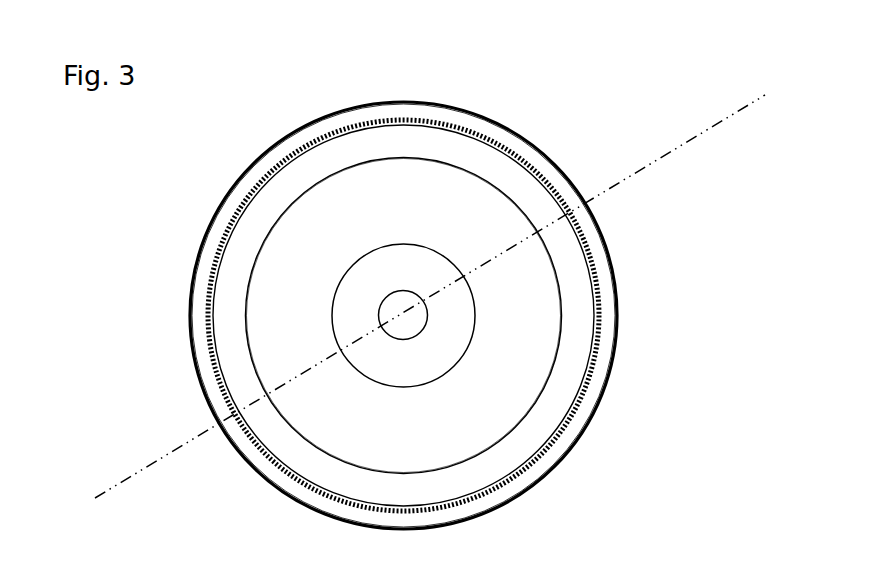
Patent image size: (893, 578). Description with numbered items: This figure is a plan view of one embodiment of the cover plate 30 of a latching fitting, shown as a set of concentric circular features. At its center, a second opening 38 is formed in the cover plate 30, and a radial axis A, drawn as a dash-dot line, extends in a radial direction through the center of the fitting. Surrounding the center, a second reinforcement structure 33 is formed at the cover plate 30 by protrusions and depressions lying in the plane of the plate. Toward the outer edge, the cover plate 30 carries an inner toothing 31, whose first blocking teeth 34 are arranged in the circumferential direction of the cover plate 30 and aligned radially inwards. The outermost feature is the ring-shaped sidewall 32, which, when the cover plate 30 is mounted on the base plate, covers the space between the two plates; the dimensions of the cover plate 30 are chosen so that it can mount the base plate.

The cover plate 30 is at (182, 202).
The inner toothing 31 is at (230, 370).
The ring-shaped sidewall 32 is at (197, 330).
The second reinforcement structure 33 is at (370, 378).
The first blocking teeth 34 is at (247, 429).
The second opening 38 is at (381, 308).
The radial axis A is at (125, 476).